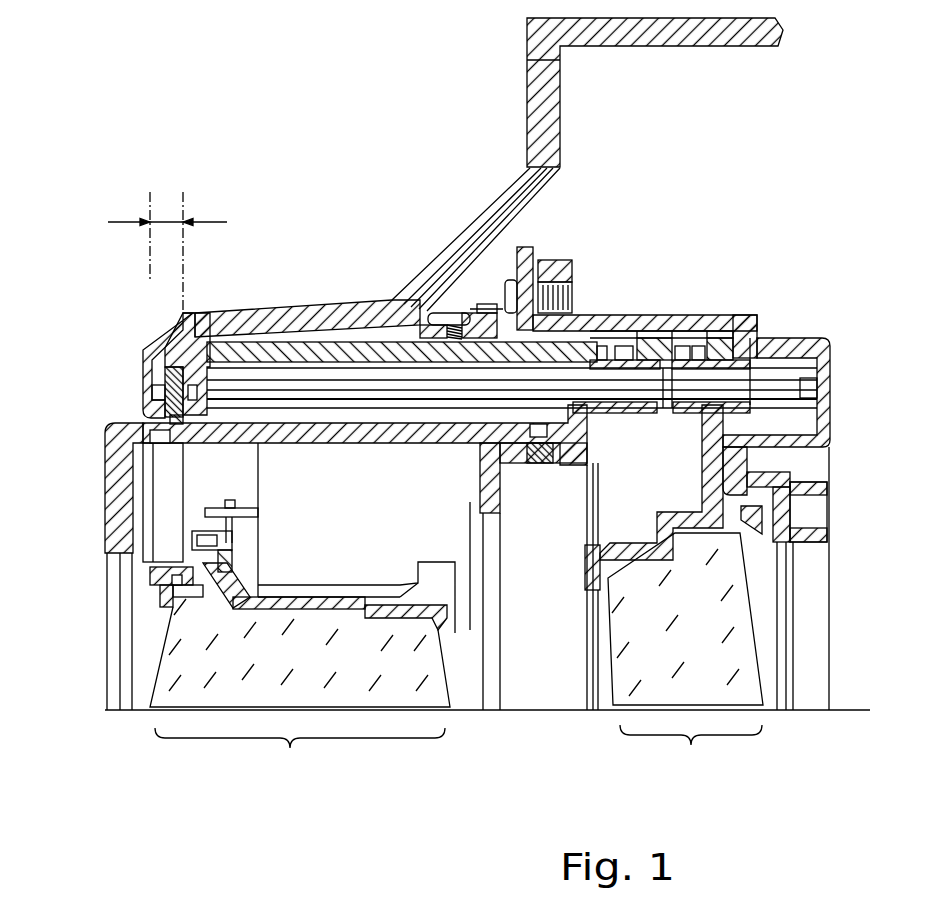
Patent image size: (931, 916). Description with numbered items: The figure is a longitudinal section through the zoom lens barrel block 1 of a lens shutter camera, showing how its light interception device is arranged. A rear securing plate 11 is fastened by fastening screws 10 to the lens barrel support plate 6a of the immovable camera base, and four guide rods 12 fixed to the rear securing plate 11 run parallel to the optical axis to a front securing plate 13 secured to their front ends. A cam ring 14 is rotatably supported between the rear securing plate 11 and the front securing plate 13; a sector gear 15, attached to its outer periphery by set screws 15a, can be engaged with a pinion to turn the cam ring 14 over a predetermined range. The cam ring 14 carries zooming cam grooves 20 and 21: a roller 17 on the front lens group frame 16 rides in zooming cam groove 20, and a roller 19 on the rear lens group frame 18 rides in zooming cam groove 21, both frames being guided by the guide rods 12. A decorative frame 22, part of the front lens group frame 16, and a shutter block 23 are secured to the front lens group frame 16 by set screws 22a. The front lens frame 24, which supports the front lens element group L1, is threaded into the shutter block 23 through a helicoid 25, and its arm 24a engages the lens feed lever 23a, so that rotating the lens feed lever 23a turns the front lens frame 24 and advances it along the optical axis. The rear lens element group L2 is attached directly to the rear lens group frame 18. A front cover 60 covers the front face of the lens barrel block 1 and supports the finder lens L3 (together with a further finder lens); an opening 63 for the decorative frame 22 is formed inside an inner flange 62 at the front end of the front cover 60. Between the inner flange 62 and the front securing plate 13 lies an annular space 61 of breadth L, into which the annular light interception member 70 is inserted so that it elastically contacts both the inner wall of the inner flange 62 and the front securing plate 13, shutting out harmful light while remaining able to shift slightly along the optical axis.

The zoom lens barrel block 1 is at (848, 350).
The lens barrel support plate 6a is at (535, 246).
The fastening screws 10 is at (578, 312).
The rear securing plate 11 is at (757, 323).
The guide rods 12 is at (336, 383).
The front securing plate 13 is at (192, 330).
The cam ring 14 is at (280, 345).
The sector gear 15 is at (488, 302).
The set screws 15a is at (455, 316).
The front lens group frame 16 is at (567, 466).
The roller 17 is at (615, 318).
The rear lens group frame 18 is at (708, 463).
The roller 19 is at (695, 318).
The zooming cam groove 20 is at (638, 317).
The zooming cam groove 21 is at (708, 317).
The decorative frame 22 is at (410, 432).
The set screws 22a is at (530, 463).
The shutter block 23 is at (313, 517).
The lens feed lever 23a is at (250, 503).
The front lens frame 24 is at (245, 592).
The arm 24a is at (200, 523).
The helicoid 25 is at (350, 585).
The front cover 60 is at (418, 288).
The annular space 61 is at (172, 360).
The inner flange 62 is at (143, 370).
The opening 63 is at (152, 462).
The annular light interception member 70 is at (160, 408).
The breadth of annular space L is at (167, 236).
The front lens element group L1 is at (300, 697).
The rear lens element group L2 is at (685, 664).
The finder lens L3 is at (527, 77).